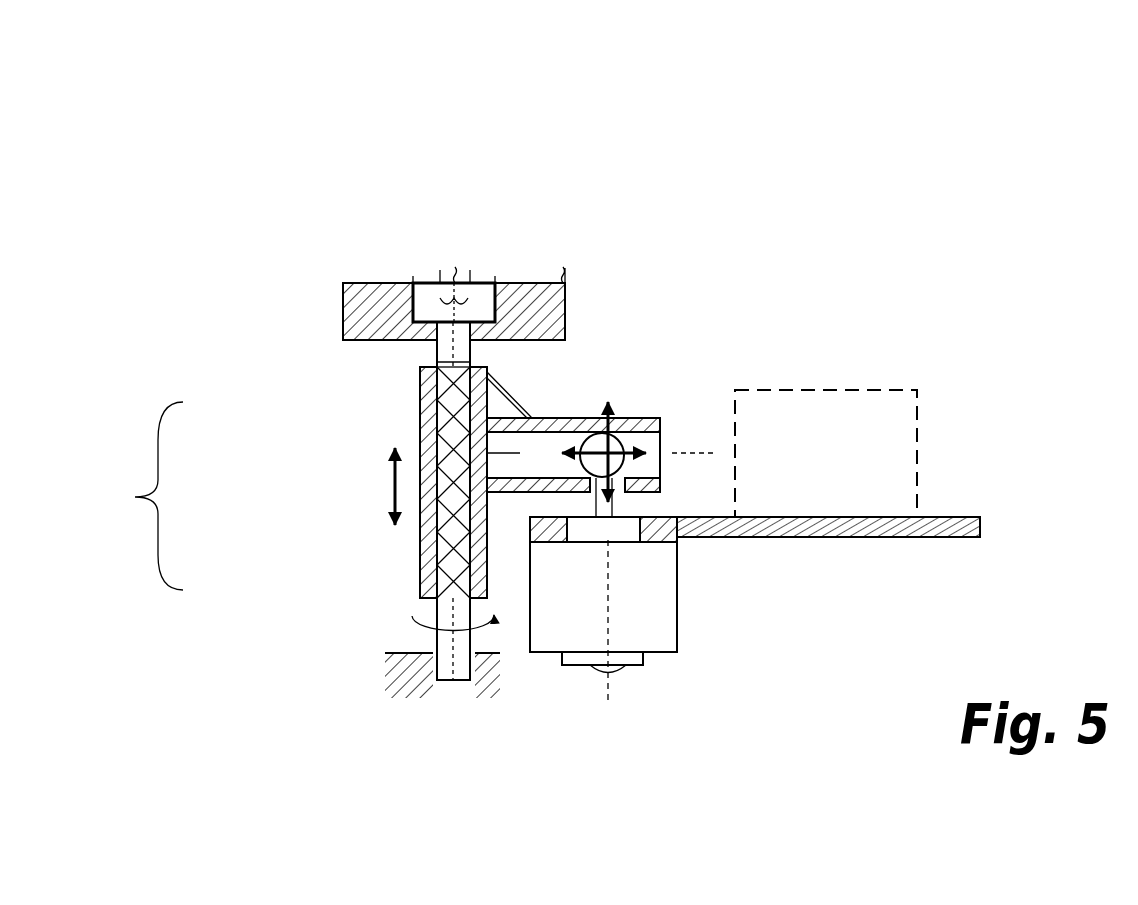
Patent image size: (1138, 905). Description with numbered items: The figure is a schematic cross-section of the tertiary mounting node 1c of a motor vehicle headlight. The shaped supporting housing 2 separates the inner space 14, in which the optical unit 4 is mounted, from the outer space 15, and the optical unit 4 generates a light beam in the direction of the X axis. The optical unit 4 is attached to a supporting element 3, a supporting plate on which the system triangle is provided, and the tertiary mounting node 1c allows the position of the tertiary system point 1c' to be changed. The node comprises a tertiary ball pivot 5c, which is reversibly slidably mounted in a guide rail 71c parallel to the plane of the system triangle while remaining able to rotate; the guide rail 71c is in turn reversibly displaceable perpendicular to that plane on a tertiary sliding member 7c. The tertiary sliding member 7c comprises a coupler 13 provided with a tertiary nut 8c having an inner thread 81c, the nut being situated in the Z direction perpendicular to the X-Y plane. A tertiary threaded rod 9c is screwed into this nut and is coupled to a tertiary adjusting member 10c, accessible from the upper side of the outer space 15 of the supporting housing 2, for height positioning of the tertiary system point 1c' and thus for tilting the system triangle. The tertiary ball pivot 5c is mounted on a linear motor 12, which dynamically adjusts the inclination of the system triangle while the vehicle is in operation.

The tertiary mounting node 1c is at (670, 152).
The tertiary system point 1c' is at (323, 375).
The supporting housing 2 is at (358, 318).
The supporting element 3 is at (720, 542).
The optical unit 4 is at (790, 388).
The tertiary ball pivot 5c is at (594, 480).
The tertiary sliding member 7c is at (526, 585).
The tertiary nut 8c is at (415, 506).
The tertiary threaded rod 9c is at (434, 349).
The tertiary adjusting member 10c is at (438, 275).
The linear motor 12 is at (543, 493).
The coupler 13 is at (135, 497).
The inner space 14 is at (518, 360).
The outer space 15 is at (492, 250).
The guide rail 71c is at (520, 448).
The inner thread 81c is at (420, 427).
The Z direction Z is at (490, 443).
The X axis X is at (593, 464).